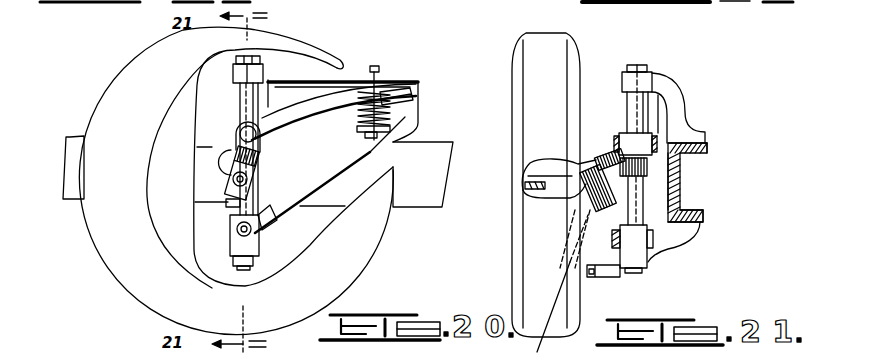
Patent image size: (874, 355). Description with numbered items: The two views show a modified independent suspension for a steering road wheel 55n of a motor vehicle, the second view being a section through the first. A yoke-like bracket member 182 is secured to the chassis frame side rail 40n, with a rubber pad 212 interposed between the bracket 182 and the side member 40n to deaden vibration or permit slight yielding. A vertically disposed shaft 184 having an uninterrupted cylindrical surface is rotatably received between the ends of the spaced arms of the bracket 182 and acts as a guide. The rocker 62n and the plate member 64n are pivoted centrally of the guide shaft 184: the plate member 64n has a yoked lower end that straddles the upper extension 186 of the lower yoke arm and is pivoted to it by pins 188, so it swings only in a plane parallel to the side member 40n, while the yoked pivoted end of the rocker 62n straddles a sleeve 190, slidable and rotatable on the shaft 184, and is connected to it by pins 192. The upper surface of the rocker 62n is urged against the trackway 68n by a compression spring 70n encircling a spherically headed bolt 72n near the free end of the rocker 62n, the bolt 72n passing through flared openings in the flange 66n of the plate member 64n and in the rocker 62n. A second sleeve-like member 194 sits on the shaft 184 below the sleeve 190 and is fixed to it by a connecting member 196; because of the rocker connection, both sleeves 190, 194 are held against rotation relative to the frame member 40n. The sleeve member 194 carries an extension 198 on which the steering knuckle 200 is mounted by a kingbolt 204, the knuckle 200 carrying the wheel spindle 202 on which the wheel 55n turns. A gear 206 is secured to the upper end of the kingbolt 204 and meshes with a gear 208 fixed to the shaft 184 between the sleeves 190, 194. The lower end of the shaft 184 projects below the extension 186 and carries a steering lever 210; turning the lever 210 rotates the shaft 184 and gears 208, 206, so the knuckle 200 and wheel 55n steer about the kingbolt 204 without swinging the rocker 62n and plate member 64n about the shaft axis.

In FIG. 20, the wheel 55n is at (128, 73).
In FIG. 21, the wheel 55n is at (513, 42).
In FIG. 20, the chassis frame side rail 40n is at (447, 144).
In FIG. 21, the chassis frame side rail 40n is at (681, 177).
In FIG. 20, the rocker 62n is at (297, 111).
In FIG. 20, the plate member 64n is at (312, 192).
In FIG. 21, the plate member 64n is at (555, 283).
In FIG. 20, the flange 66n is at (347, 81).
In FIG. 20, the trackway 68n is at (416, 88).
In FIG. 20, the compression spring 70n is at (392, 139).
In FIG. 20, the spherically headed bolt 72n is at (375, 82).
In FIG. 20, the yoke-like bracket member 182 is at (199, 79).
In FIG. 21, the yoke-like bracket member 182 is at (682, 122).
In FIG. 20, the shaft 184 is at (238, 90).
In FIG. 21, the shaft 184 is at (648, 110).
In FIG. 20, the upper extension of the lower yoke arm 186 is at (262, 226).
In FIG. 21, the upper extension of the lower yoke arm 186 is at (633, 249).
In FIG. 20, the pins 188 is at (240, 228).
In FIG. 21, the pins 188 is at (672, 246).
In FIG. 20, the sleeve 190 is at (238, 124).
In FIG. 21, the sleeve 190 is at (628, 128).
In FIG. 20, the pins 192 is at (257, 141).
In FIG. 21, the pins 192 is at (655, 145).
In FIG. 21, the second sleeve-like member 194 is at (687, 193).
In FIG. 20, the connecting member 196 is at (212, 162).
In FIG. 21, the extension 198 is at (603, 215).
In FIG. 20, the steering knuckle 200 is at (232, 181).
In FIG. 21, the steering knuckle 200 is at (546, 199).
In FIG. 21, the wheel spindle 202 is at (525, 190).
In FIG. 21, the kingbolt 204 is at (617, 248).
In FIG. 21, the gear 206 is at (593, 150).
In FIG. 21, the gear 208 is at (687, 163).
In FIG. 21, the steering lever 210 is at (601, 278).
In FIG. 21, the rubber pad 212 is at (697, 212).